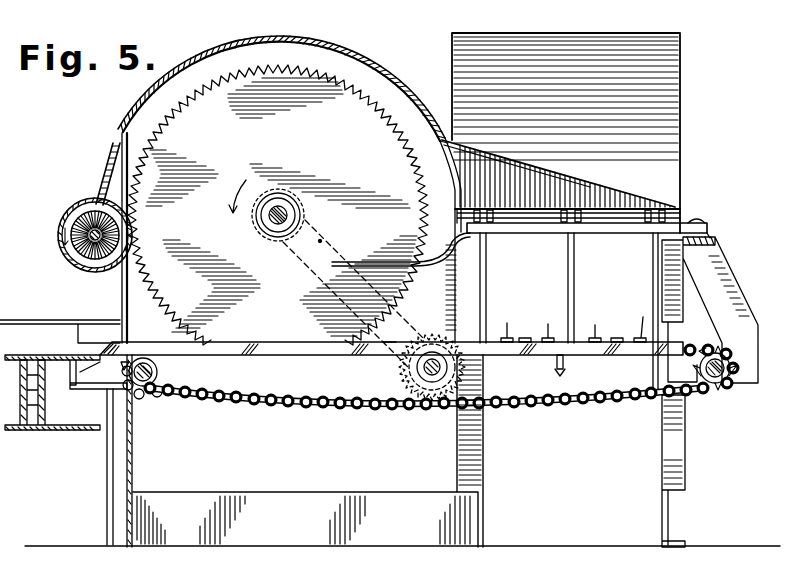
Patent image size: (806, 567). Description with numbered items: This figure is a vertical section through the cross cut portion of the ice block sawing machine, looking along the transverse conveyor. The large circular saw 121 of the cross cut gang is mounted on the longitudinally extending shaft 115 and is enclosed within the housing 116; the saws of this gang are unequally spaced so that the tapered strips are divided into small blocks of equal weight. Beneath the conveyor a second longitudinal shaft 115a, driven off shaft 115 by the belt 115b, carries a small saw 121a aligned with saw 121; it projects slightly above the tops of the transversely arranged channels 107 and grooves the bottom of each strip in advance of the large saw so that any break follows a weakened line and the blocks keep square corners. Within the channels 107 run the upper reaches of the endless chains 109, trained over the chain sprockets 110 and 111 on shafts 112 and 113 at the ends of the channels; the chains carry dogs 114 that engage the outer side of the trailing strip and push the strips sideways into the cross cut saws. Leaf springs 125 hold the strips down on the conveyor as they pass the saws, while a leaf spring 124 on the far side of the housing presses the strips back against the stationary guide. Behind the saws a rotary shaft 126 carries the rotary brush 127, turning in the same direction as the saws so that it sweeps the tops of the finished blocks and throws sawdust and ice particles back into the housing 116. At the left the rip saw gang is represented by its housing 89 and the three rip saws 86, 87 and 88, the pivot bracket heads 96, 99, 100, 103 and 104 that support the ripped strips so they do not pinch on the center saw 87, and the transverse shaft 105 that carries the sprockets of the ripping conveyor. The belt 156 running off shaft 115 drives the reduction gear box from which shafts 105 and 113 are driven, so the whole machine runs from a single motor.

The housing 116 is at (333, 47).
The cross cut saw 121 is at (362, 117).
The longitudinally extending shaft 115 is at (283, 213).
The shaft 115a is at (432, 376).
The belt 115b is at (416, 314).
The small saw 121a is at (445, 396).
The housing 89 is at (662, 98).
The leaf springs 125 is at (603, 228).
The belt 156 is at (98, 205).
The rotary shaft 126 is at (71, 225).
The rotary brush 127 is at (75, 250).
The circular saw 86 is at (487, 273).
The circular saw 87 is at (574, 273).
The circular saw 88 is at (656, 259).
The transverse shaft 105 is at (509, 325).
The head 103 is at (528, 333).
The head 96 is at (551, 325).
The head 99 is at (591, 325).
The head 104 is at (620, 333).
The head 100 is at (642, 322).
The chain sprocket 111 is at (162, 372).
The transversely arranged channels 107 is at (382, 346).
The leaf spring 124 is at (45, 395).
The longitudinally extending shaft 113 is at (148, 388).
The endless chains 109 is at (363, 409).
The dogs 114 is at (559, 410).
The chain sprocket 110 is at (712, 390).
The longitudinally extending shaft 112 is at (727, 384).